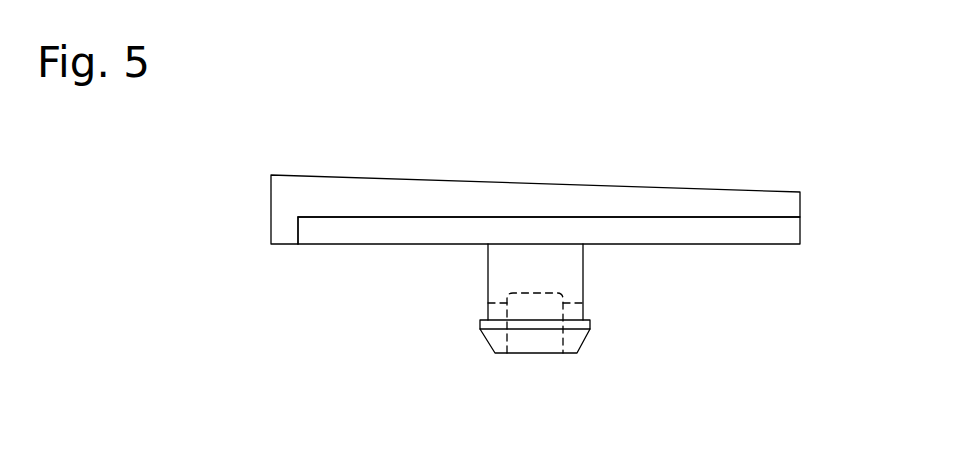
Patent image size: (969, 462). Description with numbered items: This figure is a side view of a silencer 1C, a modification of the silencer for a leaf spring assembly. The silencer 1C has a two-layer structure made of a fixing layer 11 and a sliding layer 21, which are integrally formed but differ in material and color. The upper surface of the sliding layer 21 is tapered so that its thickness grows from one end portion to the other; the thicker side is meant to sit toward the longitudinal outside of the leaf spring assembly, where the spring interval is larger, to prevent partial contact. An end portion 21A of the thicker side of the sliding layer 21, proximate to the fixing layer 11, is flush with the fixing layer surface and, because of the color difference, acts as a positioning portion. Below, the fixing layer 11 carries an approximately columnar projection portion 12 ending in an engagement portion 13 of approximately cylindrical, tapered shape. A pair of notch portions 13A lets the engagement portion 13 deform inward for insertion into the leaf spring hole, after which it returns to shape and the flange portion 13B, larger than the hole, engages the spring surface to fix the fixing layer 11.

The silencer 1C is at (557, 210).
The sliding layer 21 is at (371, 204).
The end portion 21A is at (287, 234).
The fixing layer 11 is at (380, 234).
The projection portion 12 is at (568, 276).
The engagement portion 13 is at (538, 345).
The flange portion 13B is at (590, 323).
The notch portions 13A is at (576, 338).